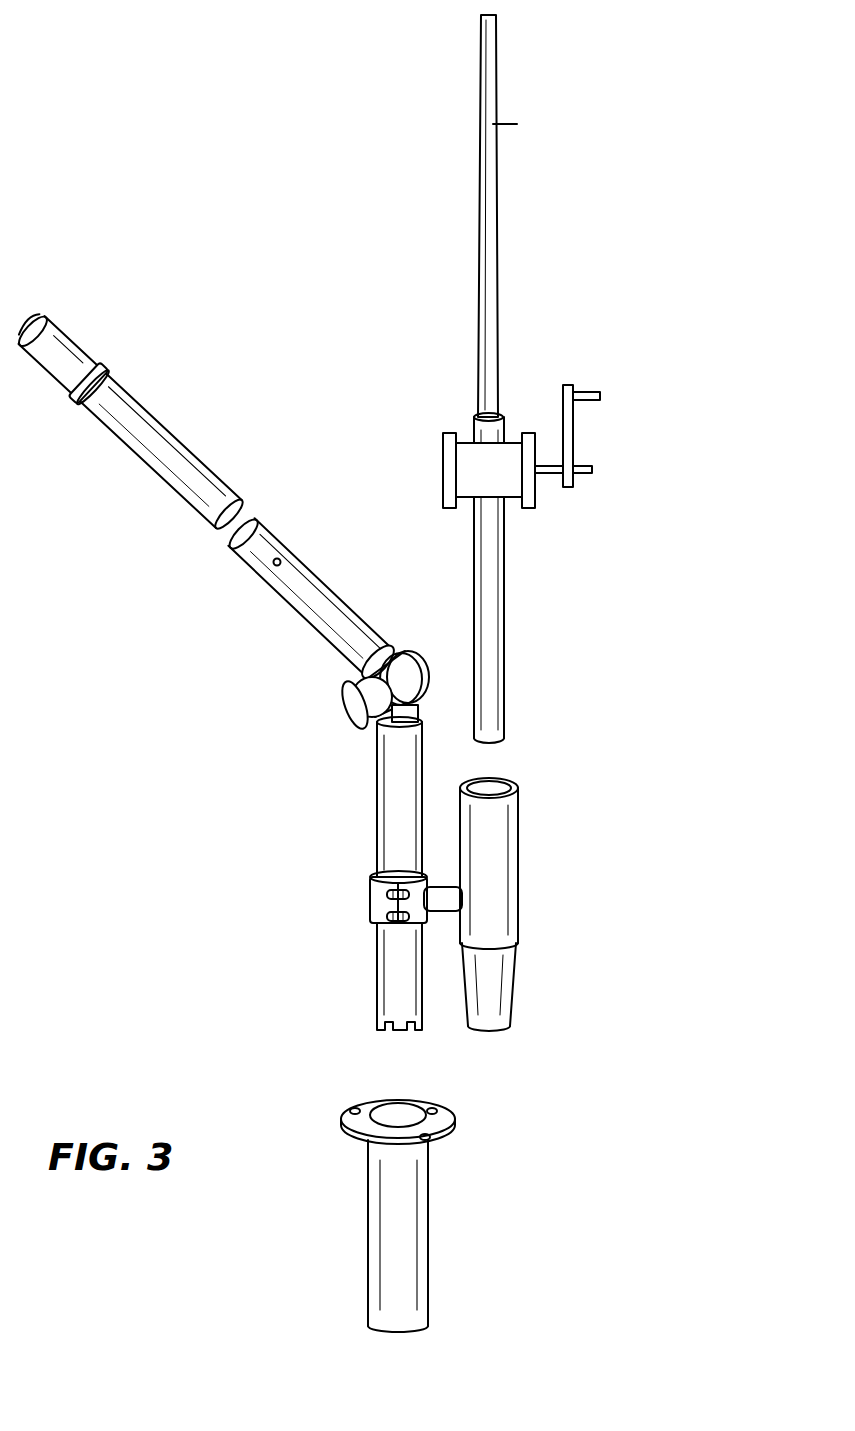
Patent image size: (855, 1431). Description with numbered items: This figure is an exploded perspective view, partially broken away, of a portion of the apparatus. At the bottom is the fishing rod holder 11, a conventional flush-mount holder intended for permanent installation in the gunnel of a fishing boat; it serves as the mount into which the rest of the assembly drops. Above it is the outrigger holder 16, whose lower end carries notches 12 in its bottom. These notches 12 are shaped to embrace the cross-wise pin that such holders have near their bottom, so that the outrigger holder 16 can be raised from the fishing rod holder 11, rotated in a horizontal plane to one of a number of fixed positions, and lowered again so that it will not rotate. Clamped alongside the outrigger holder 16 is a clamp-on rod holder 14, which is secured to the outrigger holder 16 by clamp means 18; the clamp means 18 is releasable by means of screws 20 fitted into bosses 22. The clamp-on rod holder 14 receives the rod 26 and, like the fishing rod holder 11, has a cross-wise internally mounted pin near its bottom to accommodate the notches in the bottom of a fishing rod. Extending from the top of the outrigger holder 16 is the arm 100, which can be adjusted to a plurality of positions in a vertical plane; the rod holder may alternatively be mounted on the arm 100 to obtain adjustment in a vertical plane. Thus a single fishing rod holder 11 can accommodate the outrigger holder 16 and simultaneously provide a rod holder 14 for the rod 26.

The arm 100 is at (301, 554).
The rod 26 is at (503, 594).
The outrigger holder 16 is at (378, 805).
The clamp means 18 is at (372, 898).
The bosses 22 is at (378, 925).
The screws 20 is at (420, 925).
The clamp-on rod holder 14 is at (518, 876).
The notches 12 is at (398, 1031).
The fishing rod holder 11 is at (428, 1227).